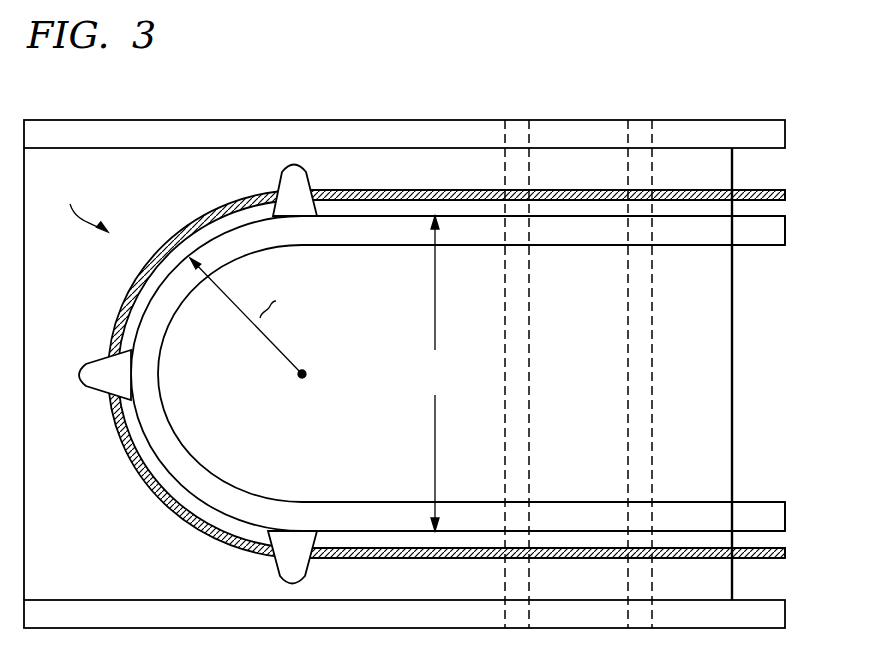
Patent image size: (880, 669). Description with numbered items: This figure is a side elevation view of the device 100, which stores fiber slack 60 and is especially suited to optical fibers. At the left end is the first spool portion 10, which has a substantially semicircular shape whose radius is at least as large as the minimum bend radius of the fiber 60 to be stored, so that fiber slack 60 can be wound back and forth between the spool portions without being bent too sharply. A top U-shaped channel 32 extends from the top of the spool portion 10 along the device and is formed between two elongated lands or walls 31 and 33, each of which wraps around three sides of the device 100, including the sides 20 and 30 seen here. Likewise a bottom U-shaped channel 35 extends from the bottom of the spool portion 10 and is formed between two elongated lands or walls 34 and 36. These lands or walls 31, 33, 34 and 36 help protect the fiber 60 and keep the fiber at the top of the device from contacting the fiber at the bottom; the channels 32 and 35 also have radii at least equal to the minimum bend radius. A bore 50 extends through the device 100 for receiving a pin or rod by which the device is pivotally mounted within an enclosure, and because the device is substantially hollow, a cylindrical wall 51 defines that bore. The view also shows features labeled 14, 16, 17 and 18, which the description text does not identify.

The device 100 is at (104, 83).
The first spool portion 10 is at (81, 205).
The support standoffs 14 is at (282, 182).
The inner tube wall 16 is at (474, 175).
The outer tube wall 17 is at (208, 148).
The gap between tube and liner 18 is at (348, 214).
The side of the device 20 is at (336, 443).
The side of the device 30 is at (733, 365).
The elongated land or wall 31 is at (772, 216).
The top U-shaped channel 32 is at (767, 179).
The elongated land or wall 33 is at (770, 149).
The elongated land or wall 34 is at (770, 533).
The bottom U-shaped channel 35 is at (777, 579).
The elongated land or wall 36 is at (760, 599).
The bore 50 is at (585, 120).
The cylindrical wall 51 is at (653, 386).
The fiber slack 60 is at (385, 190).